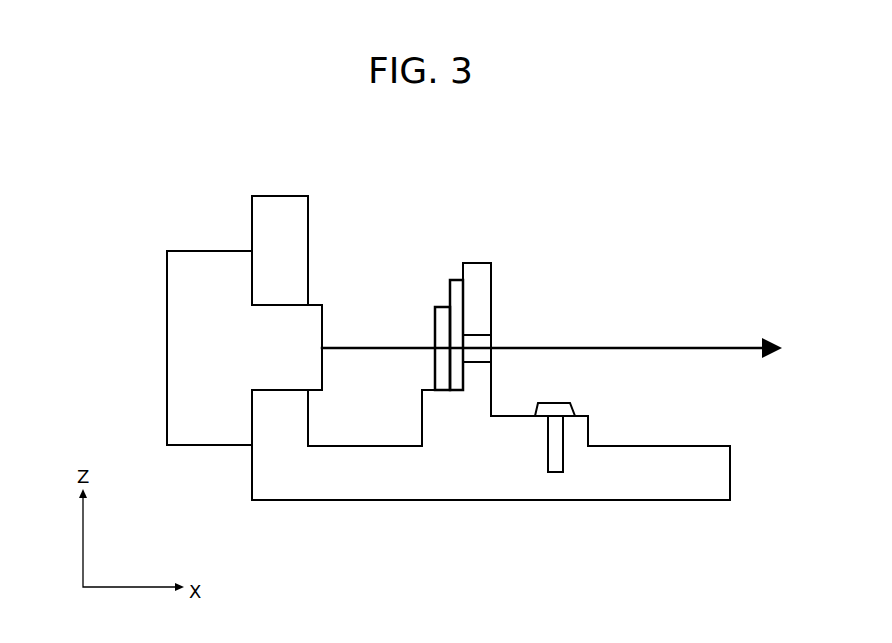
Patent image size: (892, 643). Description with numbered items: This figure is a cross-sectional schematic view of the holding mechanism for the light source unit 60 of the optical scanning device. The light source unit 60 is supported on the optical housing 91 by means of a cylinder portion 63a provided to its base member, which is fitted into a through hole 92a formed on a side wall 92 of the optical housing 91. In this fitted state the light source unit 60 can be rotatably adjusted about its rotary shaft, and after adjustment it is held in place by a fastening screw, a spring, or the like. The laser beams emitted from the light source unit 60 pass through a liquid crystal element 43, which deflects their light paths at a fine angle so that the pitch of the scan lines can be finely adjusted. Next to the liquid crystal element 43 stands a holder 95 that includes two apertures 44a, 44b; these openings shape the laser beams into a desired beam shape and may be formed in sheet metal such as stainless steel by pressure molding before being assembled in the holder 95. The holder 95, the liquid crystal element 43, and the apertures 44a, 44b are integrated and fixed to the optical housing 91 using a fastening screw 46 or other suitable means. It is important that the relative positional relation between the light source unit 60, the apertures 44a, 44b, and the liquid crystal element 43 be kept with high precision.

The light source unit 60 is at (195, 265).
The side wall 92 is at (282, 205).
The through hole 92a is at (292, 306).
The cylinder portion 63a is at (275, 394).
The liquid crystal element 43 is at (447, 290).
The holder 95 is at (478, 270).
The aperture 44a is at (478, 332).
The aperture 44b is at (542, 305).
The fastening screw 46 is at (552, 402).
The optical housing 91 is at (669, 501).